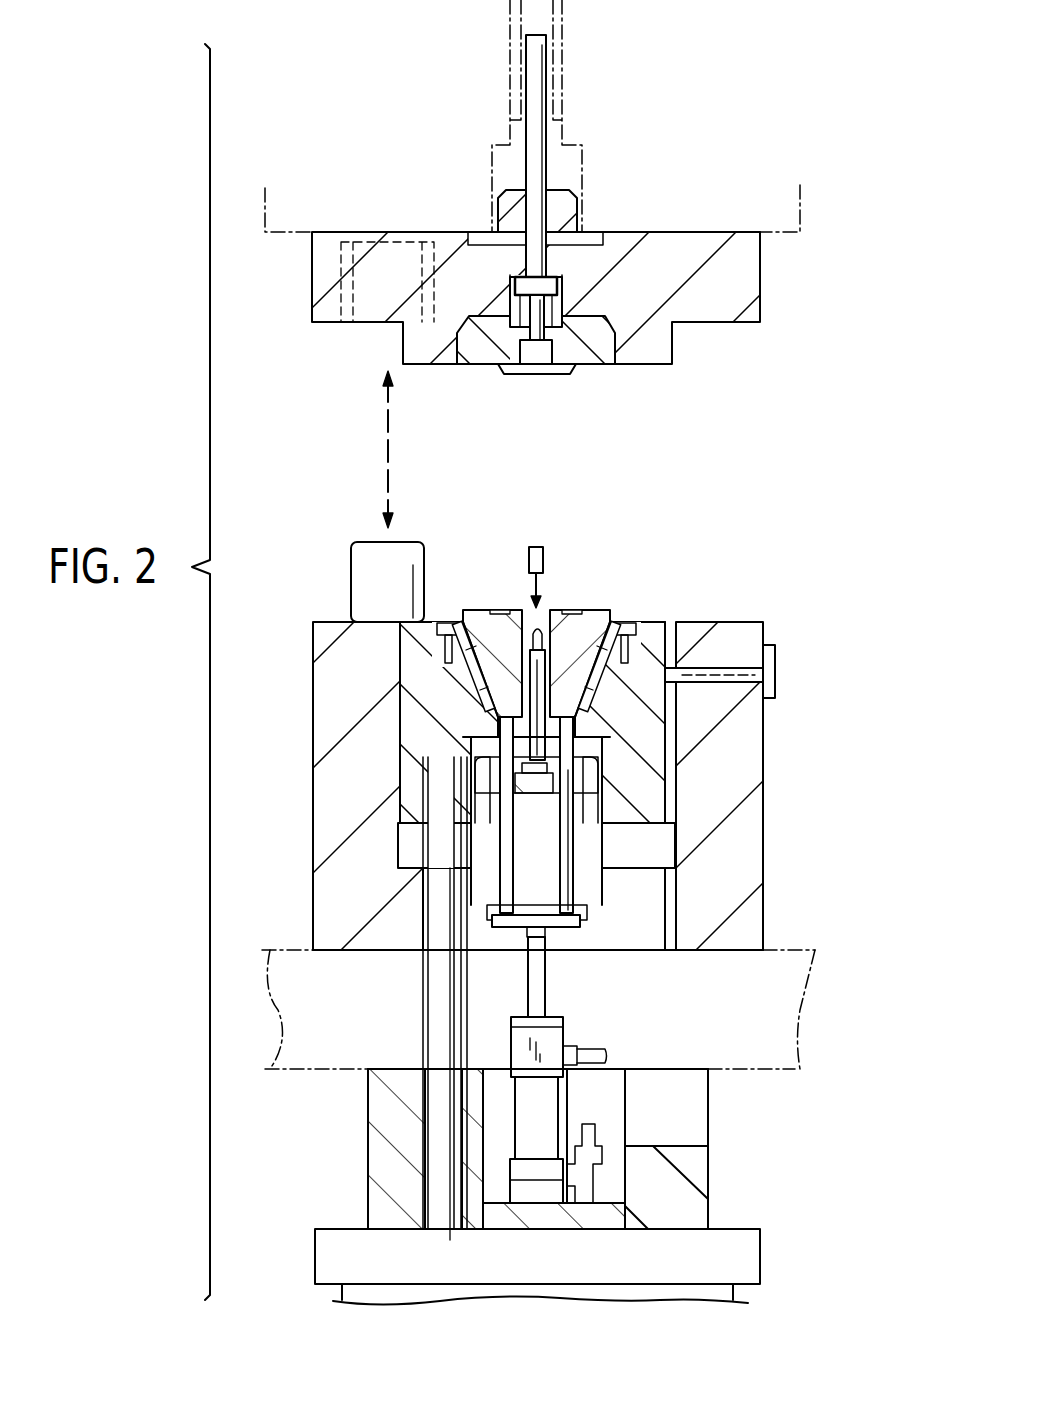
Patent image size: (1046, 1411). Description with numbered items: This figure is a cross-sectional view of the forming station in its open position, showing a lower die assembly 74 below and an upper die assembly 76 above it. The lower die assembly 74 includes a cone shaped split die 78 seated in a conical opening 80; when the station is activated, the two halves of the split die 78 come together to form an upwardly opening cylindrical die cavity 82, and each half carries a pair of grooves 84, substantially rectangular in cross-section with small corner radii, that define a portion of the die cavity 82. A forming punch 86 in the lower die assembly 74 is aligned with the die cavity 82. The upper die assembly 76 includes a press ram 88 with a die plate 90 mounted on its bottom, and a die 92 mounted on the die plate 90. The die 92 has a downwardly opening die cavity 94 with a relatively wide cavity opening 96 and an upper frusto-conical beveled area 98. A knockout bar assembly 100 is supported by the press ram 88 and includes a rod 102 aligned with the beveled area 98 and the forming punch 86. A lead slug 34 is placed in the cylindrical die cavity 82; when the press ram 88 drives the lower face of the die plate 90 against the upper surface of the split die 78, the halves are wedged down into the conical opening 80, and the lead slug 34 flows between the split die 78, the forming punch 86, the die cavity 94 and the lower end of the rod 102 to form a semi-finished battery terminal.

The lead slug 34 is at (536, 547).
The lower die assembly 74 is at (525, 895).
The upper die assembly 76 is at (557, 264).
The split die 78 is at (601, 610).
The conical opening 80 is at (468, 676).
The cylindrical die cavity 82 is at (545, 607).
The grooves 84 is at (528, 607).
The forming punch 86 is at (520, 683).
The press ram 88 is at (770, 218).
The die plate 90 is at (738, 298).
The die 92 is at (599, 366).
The die cavity 94 is at (521, 376).
The cavity opening 96 is at (546, 372).
The beveled area 98 is at (500, 365).
The knockout bar assembly 100 is at (563, 282).
The rod 102 is at (562, 310).